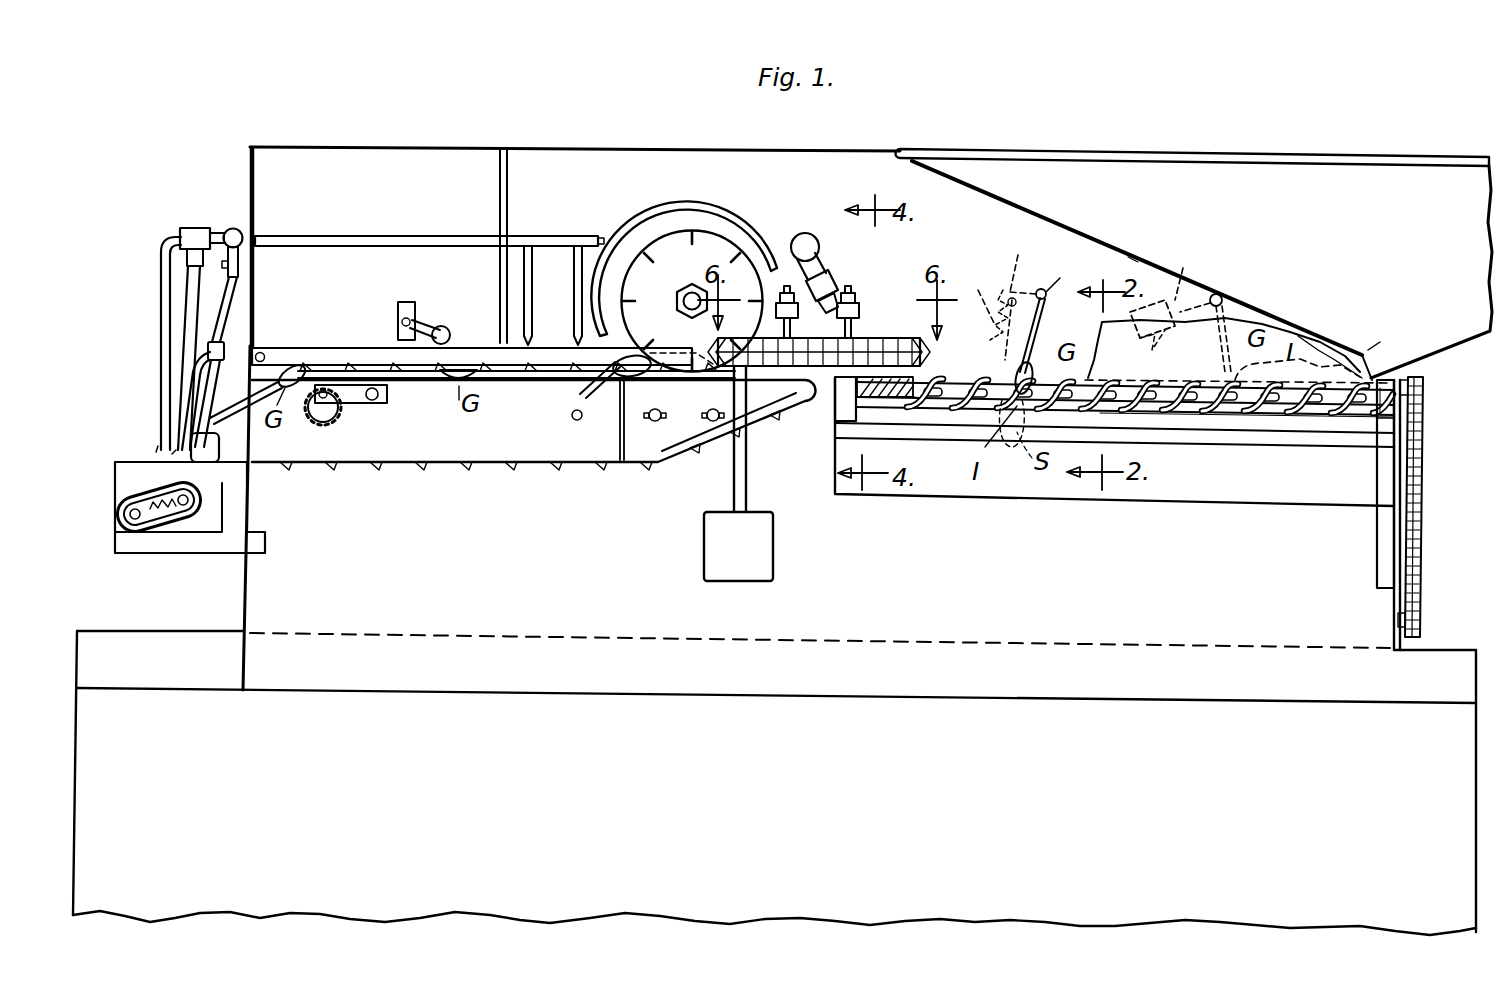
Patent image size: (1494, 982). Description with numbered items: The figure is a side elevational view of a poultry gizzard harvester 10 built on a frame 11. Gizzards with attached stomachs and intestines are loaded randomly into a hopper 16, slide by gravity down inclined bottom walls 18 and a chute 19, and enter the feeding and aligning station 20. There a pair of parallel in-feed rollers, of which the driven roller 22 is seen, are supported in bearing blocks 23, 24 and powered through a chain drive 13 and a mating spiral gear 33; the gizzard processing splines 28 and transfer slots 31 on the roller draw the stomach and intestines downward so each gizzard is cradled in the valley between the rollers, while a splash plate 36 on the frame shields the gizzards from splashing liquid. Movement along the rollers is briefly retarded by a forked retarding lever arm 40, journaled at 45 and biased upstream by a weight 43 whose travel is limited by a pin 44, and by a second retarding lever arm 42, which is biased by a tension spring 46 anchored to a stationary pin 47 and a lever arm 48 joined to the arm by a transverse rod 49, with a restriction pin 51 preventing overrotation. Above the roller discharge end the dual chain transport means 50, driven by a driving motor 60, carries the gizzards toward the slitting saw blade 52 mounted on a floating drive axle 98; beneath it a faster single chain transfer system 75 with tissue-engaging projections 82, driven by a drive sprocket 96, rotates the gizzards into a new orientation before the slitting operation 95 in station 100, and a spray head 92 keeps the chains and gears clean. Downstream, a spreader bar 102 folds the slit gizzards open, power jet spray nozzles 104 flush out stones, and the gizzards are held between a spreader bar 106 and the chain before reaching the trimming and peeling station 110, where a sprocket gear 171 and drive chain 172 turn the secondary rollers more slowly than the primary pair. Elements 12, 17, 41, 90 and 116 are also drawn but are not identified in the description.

The gizzard harvester 10 is at (1156, 103).
The frame 11 is at (1376, 556).
The trough 12 is at (1180, 502).
The chain drive 13 is at (1421, 528).
The hopper 16 is at (1302, 174).
The hopper top rail 17 is at (1420, 182).
The inclined bottom walls 18 is at (1128, 258).
The chute 19 is at (1370, 365).
The feeding and aligning station 20 is at (1110, 178).
The in-feed roller 22 is at (1180, 410).
The bearing block 23 is at (1387, 404).
The bearing block 24 is at (831, 424).
The gizzard processing splines 28 is at (1289, 412).
The transfer slots 31 is at (977, 398).
The spiral gear 33 is at (890, 395).
The splash plate 36 is at (1272, 330).
The gizzard retarding lever arm 40 is at (1222, 363).
The conveyor bottom 41 is at (884, 402).
The retarding lever arm 42 is at (1031, 364).
The weight 43 is at (1191, 268).
The pin 44 is at (1150, 334).
The journal 45 is at (1246, 290).
The tension spring 46 is at (975, 295).
The stationary pin 47 is at (982, 338).
The lever arm 48 is at (1019, 266).
The transverse rod 49 is at (1064, 275).
The dual chain transport means 50 is at (889, 328).
The restriction pin 51 is at (999, 331).
The slitting saw blade 52 is at (672, 248).
The driving motor 60 is at (775, 553).
The single chain transfer system 75 is at (679, 462).
The projections 82 is at (612, 468).
The adjusting bolts 90 is at (848, 323).
The spray head 92 is at (818, 266).
The slitting operation 95 is at (727, 175).
The drive sprocket 96 is at (340, 420).
The drive axle 98 is at (682, 307).
The slitting station 100 is at (559, 168).
The spreader bar 102 is at (582, 388).
The power jet spray nozzles 104 is at (578, 330).
The spreader bar 106 is at (374, 331).
The trimming and peeling station 110 is at (193, 181).
The drive pulley 116 is at (133, 518).
The sprocket gear 171 is at (196, 500).
The drive chain 172 is at (183, 510).